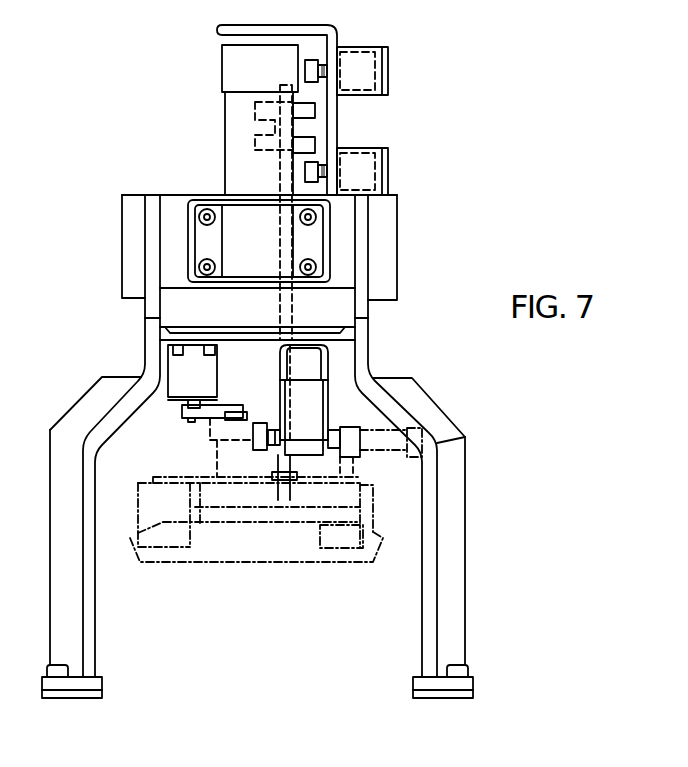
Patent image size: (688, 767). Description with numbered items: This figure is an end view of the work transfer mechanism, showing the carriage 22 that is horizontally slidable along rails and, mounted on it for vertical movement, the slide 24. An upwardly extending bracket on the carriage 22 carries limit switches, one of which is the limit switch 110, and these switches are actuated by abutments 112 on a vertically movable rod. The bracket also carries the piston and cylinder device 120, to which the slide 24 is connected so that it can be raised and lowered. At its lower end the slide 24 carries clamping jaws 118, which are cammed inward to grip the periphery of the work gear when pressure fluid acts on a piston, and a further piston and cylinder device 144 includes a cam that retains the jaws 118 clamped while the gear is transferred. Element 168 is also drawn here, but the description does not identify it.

The carriage 22 is at (397, 252).
The slide 24 is at (217, 452).
The limit switch 110 is at (380, 149).
The abutments 112 is at (245, 138).
The clamping jaws 118 is at (137, 492).
The piston and cylinder device 120 is at (225, 168).
The piston and cylinder device 144 is at (365, 452).
The upper sensor box 168 is at (372, 47).